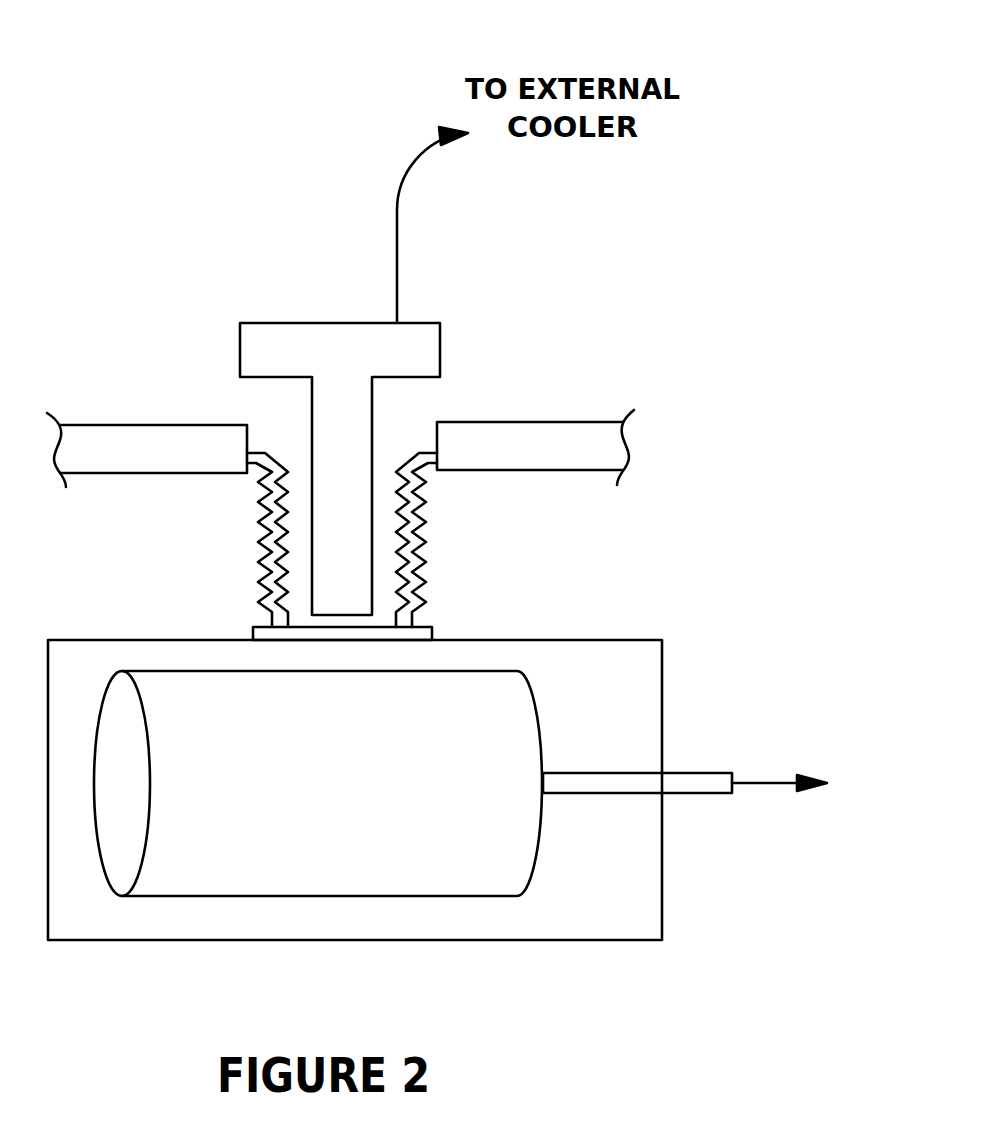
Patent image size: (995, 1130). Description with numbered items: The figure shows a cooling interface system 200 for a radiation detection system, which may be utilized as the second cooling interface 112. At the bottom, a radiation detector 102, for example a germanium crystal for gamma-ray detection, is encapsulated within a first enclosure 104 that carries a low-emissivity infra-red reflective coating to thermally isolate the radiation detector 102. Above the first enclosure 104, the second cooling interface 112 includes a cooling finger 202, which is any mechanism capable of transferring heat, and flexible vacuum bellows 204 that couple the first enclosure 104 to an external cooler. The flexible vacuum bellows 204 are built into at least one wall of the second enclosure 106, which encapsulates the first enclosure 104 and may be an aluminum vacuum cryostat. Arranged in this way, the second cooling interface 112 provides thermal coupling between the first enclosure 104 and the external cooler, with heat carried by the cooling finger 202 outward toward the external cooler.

The cooling interface system 200 is at (860, 114).
The cooling finger 202 is at (355, 322).
The second cooling interface 112 is at (484, 325).
The second enclosure 106 is at (103, 425).
The flexible vacuum bellows 204 is at (234, 610).
The first enclosure 104 is at (513, 640).
The radiation detector 102 is at (358, 789).